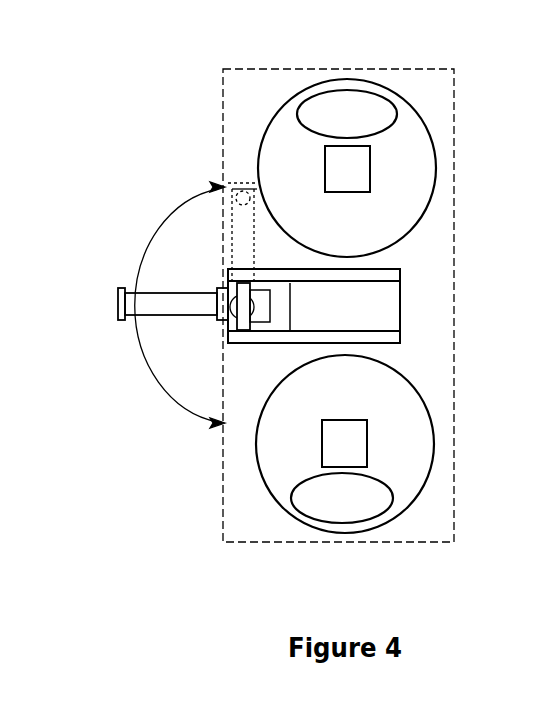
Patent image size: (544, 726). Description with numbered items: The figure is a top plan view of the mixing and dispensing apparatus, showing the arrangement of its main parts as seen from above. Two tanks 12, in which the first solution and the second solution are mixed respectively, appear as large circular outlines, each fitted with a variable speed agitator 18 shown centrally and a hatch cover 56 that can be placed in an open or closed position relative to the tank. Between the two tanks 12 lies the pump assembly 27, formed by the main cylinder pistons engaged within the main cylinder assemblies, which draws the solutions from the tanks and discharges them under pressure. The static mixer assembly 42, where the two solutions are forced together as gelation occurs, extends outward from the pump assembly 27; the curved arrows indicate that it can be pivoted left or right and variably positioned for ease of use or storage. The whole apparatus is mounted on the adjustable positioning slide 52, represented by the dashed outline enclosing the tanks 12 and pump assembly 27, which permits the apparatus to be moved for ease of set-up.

The tank 12 is at (420, 140).
The variable speed agitator 18 is at (362, 179).
The pump assembly 27 is at (370, 304).
The static mixer assembly 42 is at (153, 316).
The adjustable positioning slide 52 is at (455, 267).
The hatch cover 56 is at (352, 98).